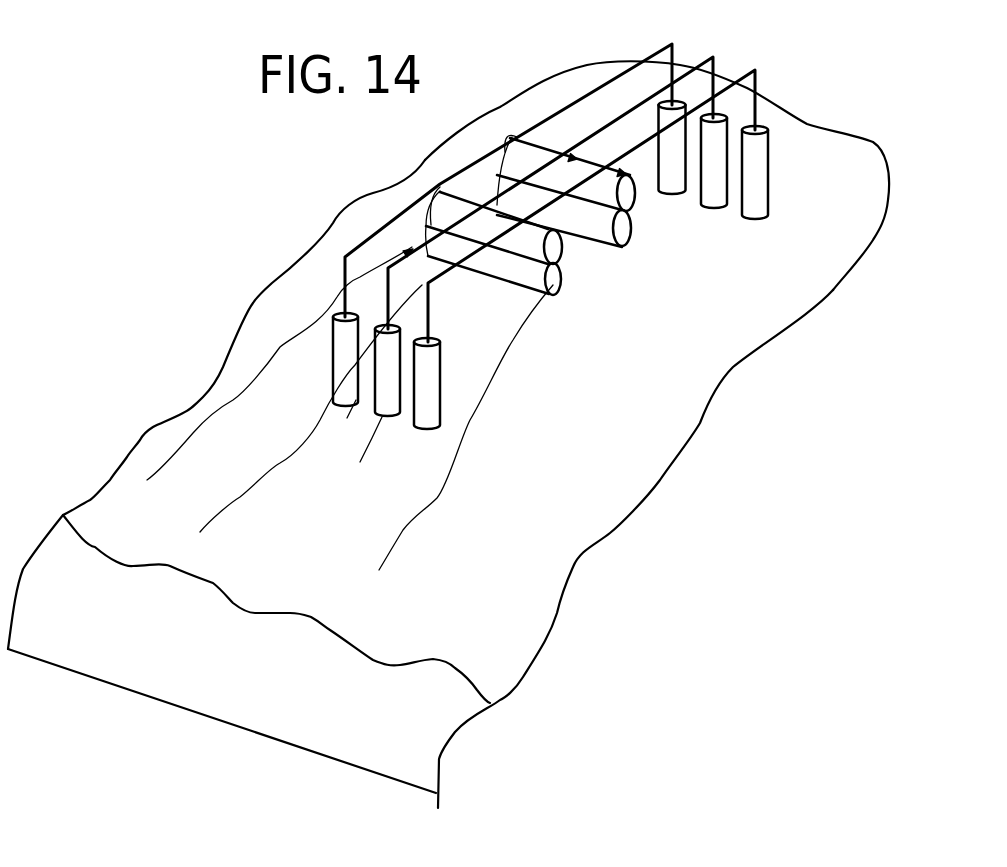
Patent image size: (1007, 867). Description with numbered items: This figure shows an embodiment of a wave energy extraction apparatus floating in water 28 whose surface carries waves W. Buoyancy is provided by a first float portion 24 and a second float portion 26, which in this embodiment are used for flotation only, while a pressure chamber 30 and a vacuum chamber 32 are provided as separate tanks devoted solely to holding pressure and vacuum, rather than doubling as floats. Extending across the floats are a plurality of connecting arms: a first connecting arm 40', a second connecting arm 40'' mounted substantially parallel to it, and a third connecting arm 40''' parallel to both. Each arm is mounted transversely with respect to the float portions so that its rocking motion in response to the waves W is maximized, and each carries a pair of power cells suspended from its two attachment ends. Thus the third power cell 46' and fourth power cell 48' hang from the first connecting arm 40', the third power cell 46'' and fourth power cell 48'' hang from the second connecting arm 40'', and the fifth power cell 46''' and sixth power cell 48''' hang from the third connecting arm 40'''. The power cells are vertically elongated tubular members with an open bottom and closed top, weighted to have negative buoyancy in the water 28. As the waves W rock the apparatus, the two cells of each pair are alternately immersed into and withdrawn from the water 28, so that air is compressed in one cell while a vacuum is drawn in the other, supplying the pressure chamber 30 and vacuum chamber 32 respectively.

The first connecting arm 40' is at (638, 197).
The second connecting arm 40'' is at (550, 166).
The third connecting arm 40''' is at (508, 175).
The fourth power cell 48' is at (800, 176).
The fourth power cell 48'' is at (775, 161).
The sixth power cell 48''' is at (734, 190).
The third power cell 46' is at (464, 383).
The third power cell 46'' is at (343, 370).
The fifth power cell 46''' is at (307, 353).
The pressure chamber 30 is at (633, 198).
The first float portion 24 is at (633, 240).
The vacuum chamber 32 is at (562, 255).
The second float portion 26 is at (557, 280).
The waves W is at (448, 434).
The water 28 is at (552, 501).